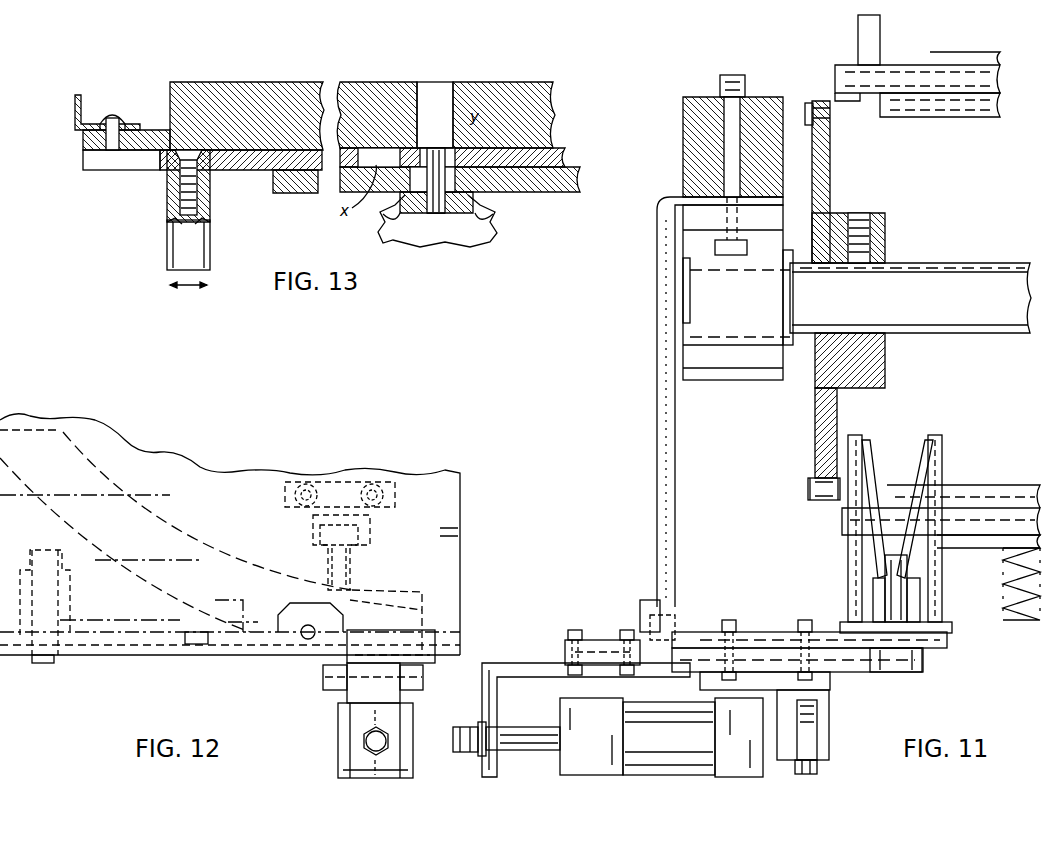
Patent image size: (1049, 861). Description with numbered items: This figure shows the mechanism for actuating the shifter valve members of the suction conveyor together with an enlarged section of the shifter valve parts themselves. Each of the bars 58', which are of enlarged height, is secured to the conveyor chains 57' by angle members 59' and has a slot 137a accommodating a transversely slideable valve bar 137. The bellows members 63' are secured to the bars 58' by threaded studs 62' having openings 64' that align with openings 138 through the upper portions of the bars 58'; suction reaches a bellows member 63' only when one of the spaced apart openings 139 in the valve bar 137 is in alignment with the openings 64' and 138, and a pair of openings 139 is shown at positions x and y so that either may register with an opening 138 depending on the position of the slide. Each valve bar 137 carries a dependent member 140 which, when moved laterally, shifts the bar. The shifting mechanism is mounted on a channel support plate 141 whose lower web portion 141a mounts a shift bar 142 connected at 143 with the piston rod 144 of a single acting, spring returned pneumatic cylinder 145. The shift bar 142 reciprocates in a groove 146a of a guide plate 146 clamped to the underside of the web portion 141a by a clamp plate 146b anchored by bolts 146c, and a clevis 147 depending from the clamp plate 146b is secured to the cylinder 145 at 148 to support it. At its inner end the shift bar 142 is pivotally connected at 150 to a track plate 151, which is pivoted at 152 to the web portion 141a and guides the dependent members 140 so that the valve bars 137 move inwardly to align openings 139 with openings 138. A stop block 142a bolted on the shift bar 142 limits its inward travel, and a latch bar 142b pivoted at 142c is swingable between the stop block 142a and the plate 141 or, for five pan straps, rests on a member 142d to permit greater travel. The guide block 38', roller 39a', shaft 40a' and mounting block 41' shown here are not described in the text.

In FIG. 11, the guide block 38' is at (822, 405).
In FIG. 11, the roller 39a' is at (738, 313).
In FIG. 11, the shaft 40a' is at (910, 277).
In FIG. 11, the mounting block 41' is at (713, 148).
In FIG. 11, the chains 57' is at (893, 139).
In FIG. 12, the chains 57' is at (364, 467).
In FIG. 13, the bars 58' is at (461, 137).
In FIG. 11, the bars 58' is at (902, 513).
In FIG. 12, the bars 58' is at (365, 541).
In FIG. 13, the angle members 59' is at (107, 87).
In FIG. 11, the angle members 59' is at (843, 124).
In FIG. 12, the angle members 59' is at (335, 466).
In FIG. 13, the threaded studs 62' is at (434, 217).
In FIG. 13, the bellows members 63' is at (455, 221).
In FIG. 11, the bellows members 63' is at (1019, 601).
In FIG. 13, the openings 64' is at (450, 217).
In FIG. 13, the valve bars 137 is at (570, 162).
In FIG. 12, the valve bars 137 is at (372, 542).
In FIG. 13, the slots 137a is at (110, 165).
In FIG. 13, the openings 138 is at (458, 130).
In FIG. 13, the openings 139 is at (372, 153).
In FIG. 13, the dependent member 140 is at (180, 247).
In FIG. 11, the dependent member 140 is at (905, 562).
In FIG. 12, the dependent member 140 is at (350, 580).
In FIG. 11, the channel support plate 141 is at (660, 318).
In FIG. 12, the channel support plate 141 is at (463, 512).
In FIG. 11, the lower web portion 141a is at (755, 634).
In FIG. 11, the shift bar 142 is at (852, 667).
In FIG. 12, the shift bar 142 is at (345, 722).
In FIG. 11, the stop block 142a is at (612, 642).
In FIG. 12, the stop block 142a is at (372, 652).
In FIG. 12, the latch bar 142b is at (228, 578).
In FIG. 12, the pivot 142c is at (303, 640).
In FIG. 12, the member 142d is at (196, 647).
In FIG. 11, the connection 143 is at (478, 725).
In FIG. 12, the connection 143 is at (364, 740).
In FIG. 11, the piston rod 144 is at (530, 738).
In FIG. 11, the pneumatic cylinder 145 is at (568, 757).
In FIG. 12, the pneumatic cylinder 145 is at (342, 768).
In FIG. 11, the guide plate 146 is at (778, 648).
In FIG. 12, the guide plate 146 is at (332, 685).
In FIG. 11, the groove 146a is at (695, 655).
In FIG. 12, the groove 146a is at (462, 633).
In FIG. 11, the clamp plate 146b is at (832, 680).
In FIG. 11, the bolts 146c is at (803, 633).
In FIG. 11, the clevis 147 is at (825, 750).
In FIG. 11, the securing point 148 is at (800, 765).
In FIG. 11, the pivotal connection 150 is at (903, 672).
In FIG. 11, the track plate 151 is at (945, 627).
In FIG. 12, the pivot 152 is at (50, 663).